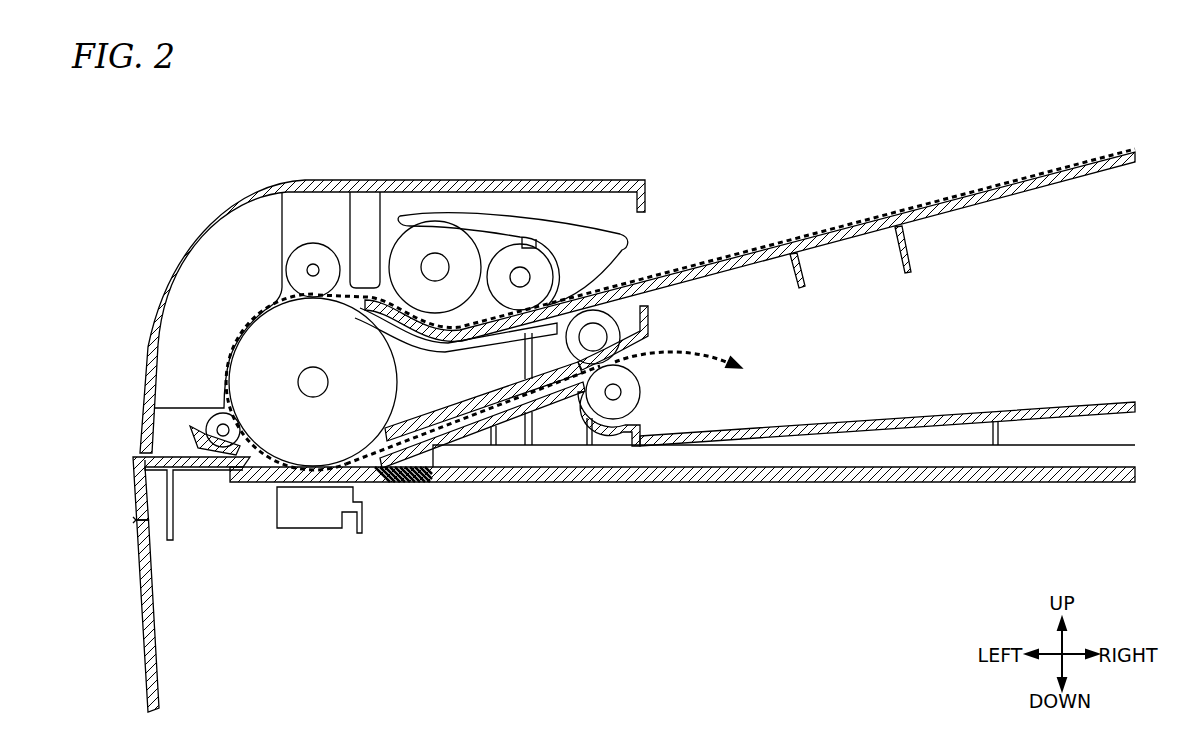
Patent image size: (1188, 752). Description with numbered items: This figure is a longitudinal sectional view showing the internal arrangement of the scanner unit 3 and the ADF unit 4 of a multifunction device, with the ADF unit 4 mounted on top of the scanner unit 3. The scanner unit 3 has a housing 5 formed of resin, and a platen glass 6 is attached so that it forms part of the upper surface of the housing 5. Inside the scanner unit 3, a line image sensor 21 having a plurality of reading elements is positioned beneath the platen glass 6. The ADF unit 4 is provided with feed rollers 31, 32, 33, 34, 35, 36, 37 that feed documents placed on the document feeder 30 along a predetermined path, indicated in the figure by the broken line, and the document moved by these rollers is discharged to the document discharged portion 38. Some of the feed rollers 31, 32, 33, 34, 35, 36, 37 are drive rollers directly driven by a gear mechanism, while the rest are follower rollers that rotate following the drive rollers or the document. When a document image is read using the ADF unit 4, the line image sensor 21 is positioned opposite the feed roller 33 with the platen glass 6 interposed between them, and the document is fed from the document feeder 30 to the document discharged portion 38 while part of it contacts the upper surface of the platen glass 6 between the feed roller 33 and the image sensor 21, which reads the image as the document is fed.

The scanner unit 3 is at (148, 656).
The ADF unit 4 is at (150, 343).
The housing 5 is at (134, 493).
The platen glass 6 is at (800, 479).
The line image sensor 21 is at (312, 522).
The document feeder 30 is at (772, 248).
The feed roller 31 is at (524, 236).
The feed roller 32 is at (390, 233).
The feed roller 33 is at (400, 377).
The feed roller 34 is at (314, 244).
The feed roller 35 is at (205, 422).
The feed roller 36 is at (642, 391).
The feed roller 37 is at (620, 308).
The document discharged portion 38 is at (845, 423).